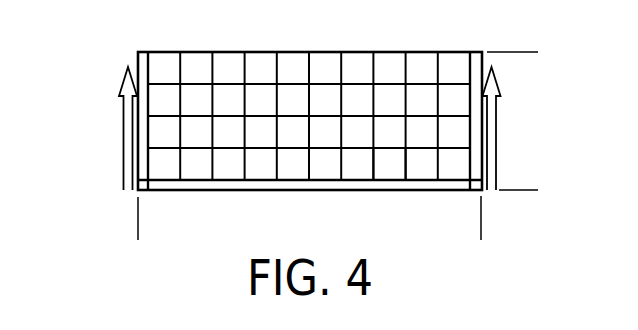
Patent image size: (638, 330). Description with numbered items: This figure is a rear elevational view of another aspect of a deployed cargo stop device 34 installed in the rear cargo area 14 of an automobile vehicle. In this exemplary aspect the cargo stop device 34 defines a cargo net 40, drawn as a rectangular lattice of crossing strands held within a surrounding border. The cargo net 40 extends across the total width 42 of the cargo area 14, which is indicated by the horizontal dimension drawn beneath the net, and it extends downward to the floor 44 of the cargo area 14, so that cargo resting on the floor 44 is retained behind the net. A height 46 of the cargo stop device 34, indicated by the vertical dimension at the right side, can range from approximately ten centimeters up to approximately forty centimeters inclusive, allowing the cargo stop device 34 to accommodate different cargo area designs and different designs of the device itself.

The rear cargo area 14 is at (148, 133).
The cargo stop device 34 is at (95, 45).
The cargo net 40 is at (278, 72).
The total width 42 is at (481, 233).
The floor 44 is at (388, 180).
The height 46 is at (530, 52).